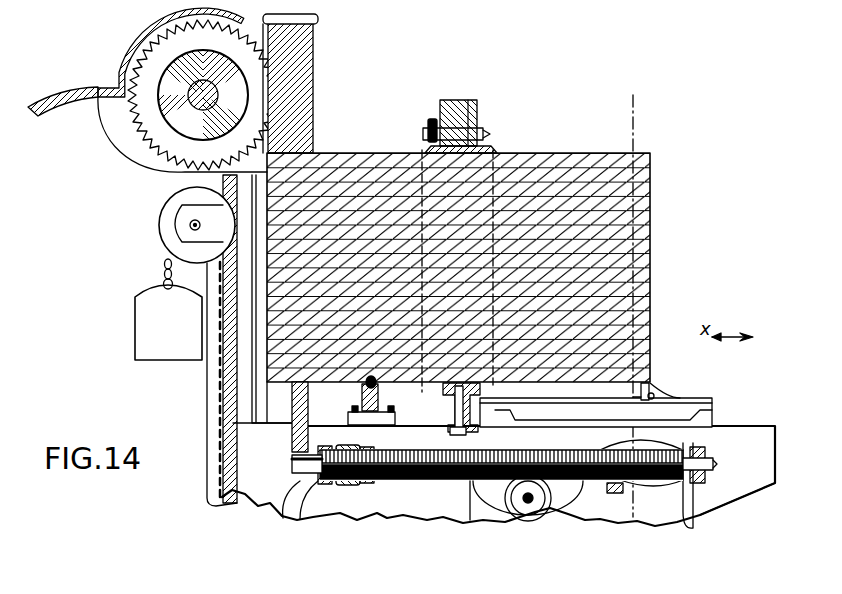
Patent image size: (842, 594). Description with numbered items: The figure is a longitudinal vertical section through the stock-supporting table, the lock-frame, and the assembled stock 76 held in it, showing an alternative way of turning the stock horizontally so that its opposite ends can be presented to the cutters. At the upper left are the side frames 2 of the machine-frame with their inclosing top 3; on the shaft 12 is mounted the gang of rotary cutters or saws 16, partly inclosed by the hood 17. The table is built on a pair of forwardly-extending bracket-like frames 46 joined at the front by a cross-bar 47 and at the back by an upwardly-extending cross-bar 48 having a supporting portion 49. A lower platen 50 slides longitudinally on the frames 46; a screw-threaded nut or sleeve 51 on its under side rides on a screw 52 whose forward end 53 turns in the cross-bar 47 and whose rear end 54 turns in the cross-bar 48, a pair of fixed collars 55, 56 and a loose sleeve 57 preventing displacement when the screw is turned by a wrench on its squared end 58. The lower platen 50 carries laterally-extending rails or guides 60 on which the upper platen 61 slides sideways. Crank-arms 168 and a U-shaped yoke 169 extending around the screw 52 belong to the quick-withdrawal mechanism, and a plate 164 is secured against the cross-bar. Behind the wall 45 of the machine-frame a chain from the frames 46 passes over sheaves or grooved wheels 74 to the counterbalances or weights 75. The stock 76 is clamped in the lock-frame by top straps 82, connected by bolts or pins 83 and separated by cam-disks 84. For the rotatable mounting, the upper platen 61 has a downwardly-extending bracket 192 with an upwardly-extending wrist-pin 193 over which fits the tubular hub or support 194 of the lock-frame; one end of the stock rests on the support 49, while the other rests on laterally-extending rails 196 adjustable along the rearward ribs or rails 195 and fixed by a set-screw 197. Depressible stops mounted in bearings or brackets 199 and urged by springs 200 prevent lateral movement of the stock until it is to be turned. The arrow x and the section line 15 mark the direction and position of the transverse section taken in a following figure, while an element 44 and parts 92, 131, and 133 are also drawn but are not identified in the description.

The side frames 2 is at (170, 134).
The inclosing top 3 is at (61, 91).
The shaft 12 is at (189, 95).
The section line 15- 15 is at (649, 306).
The rotary cutters or saws 16 is at (134, 113).
The hood 17 is at (136, 46).
The guide rail 44 is at (228, 390).
The wall 45 is at (225, 413).
The bracket-like frames 46 is at (498, 477).
The cross-bar 47 is at (708, 452).
The upwardly-extending cross-bar 48 is at (292, 430).
The supporting portion 49 is at (291, 388).
The lower platen 50 is at (713, 424).
The screw-threaded nut or sleeve 51 is at (553, 483).
The screw 52 is at (421, 481).
The forward end of screw 53 is at (745, 503).
The rear end of screw 54 is at (292, 462).
The fixed collar 55 is at (326, 485).
The fixed collar 56 is at (373, 485).
The sleeve 57 is at (348, 486).
The squared end 58 is at (711, 466).
The rails or guides 60 is at (713, 408).
The upper platen 61 is at (713, 400).
The sheaves or grooved wheels 74 is at (160, 220).
The counterbalances or weights 75 is at (135, 330).
The stock 76 is at (360, 155).
The top straps 82 is at (477, 110).
The bolts or pins 83 is at (471, 134).
The cam-disks 84 is at (459, 104).
The nut 92 is at (428, 128).
The cap 131 is at (319, 20).
The column 133 is at (314, 86).
The plate 164 is at (691, 526).
The crank-arms 168 is at (652, 444).
The U-shaped connection or yoke 169 is at (617, 495).
The downwardly-extending bracket 192 is at (468, 428).
The wrist-pin 193 is at (449, 416).
The tubular hub or support 194 is at (452, 400).
The ribs or rails 195 is at (679, 397).
The laterally-extending ribs or rails 196 is at (653, 392).
The set-screw 197 is at (633, 397).
The bearings or brackets 199 is at (384, 392).
The springs 200 is at (368, 392).